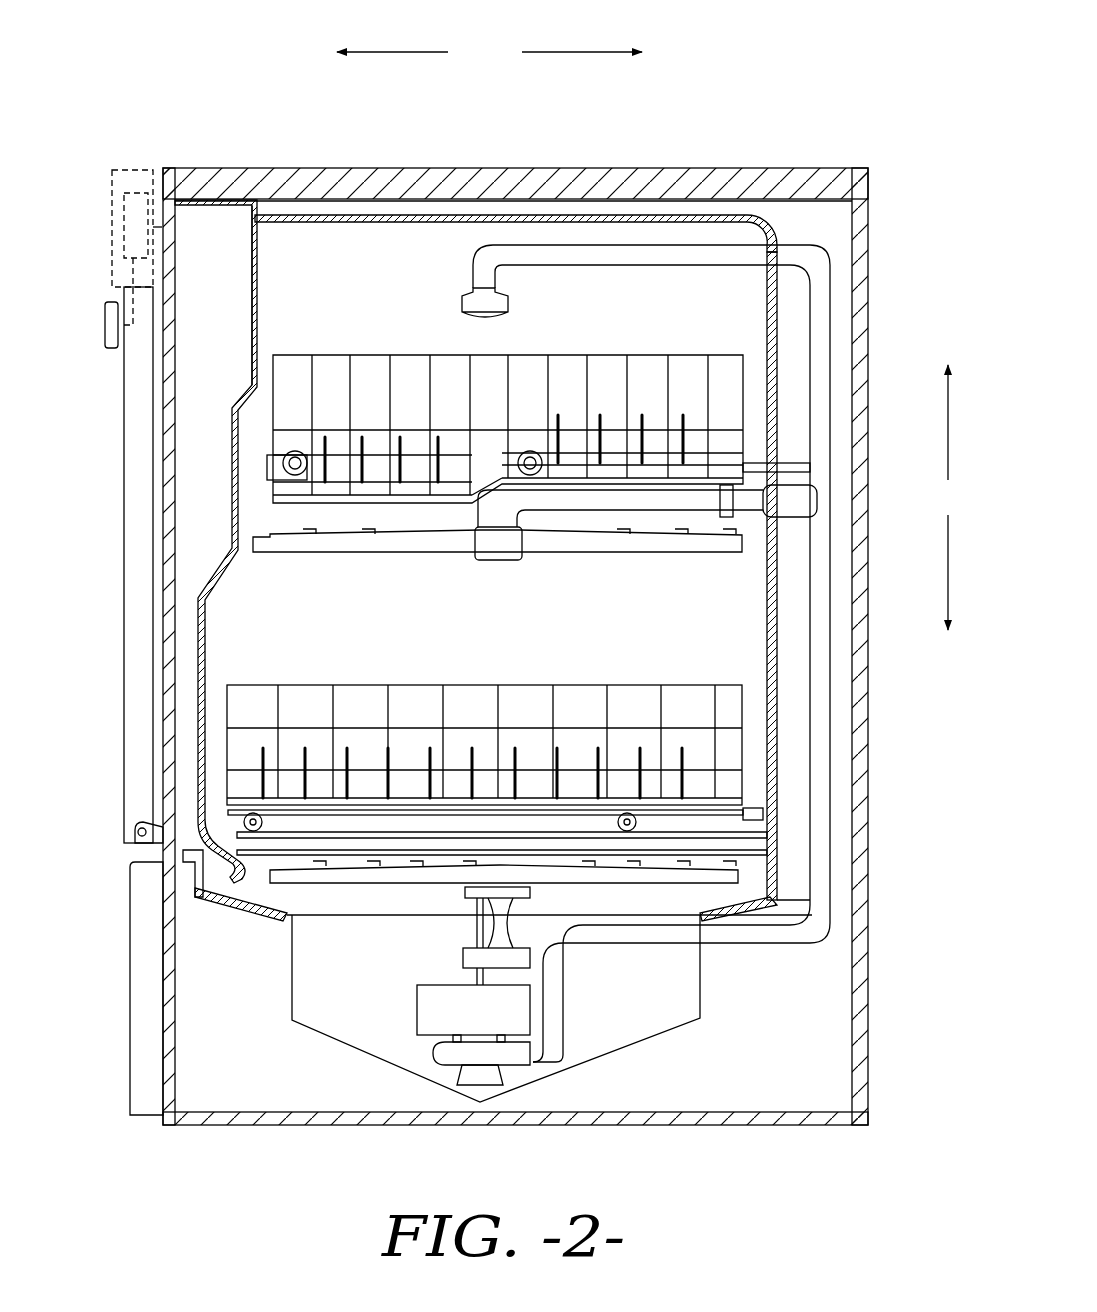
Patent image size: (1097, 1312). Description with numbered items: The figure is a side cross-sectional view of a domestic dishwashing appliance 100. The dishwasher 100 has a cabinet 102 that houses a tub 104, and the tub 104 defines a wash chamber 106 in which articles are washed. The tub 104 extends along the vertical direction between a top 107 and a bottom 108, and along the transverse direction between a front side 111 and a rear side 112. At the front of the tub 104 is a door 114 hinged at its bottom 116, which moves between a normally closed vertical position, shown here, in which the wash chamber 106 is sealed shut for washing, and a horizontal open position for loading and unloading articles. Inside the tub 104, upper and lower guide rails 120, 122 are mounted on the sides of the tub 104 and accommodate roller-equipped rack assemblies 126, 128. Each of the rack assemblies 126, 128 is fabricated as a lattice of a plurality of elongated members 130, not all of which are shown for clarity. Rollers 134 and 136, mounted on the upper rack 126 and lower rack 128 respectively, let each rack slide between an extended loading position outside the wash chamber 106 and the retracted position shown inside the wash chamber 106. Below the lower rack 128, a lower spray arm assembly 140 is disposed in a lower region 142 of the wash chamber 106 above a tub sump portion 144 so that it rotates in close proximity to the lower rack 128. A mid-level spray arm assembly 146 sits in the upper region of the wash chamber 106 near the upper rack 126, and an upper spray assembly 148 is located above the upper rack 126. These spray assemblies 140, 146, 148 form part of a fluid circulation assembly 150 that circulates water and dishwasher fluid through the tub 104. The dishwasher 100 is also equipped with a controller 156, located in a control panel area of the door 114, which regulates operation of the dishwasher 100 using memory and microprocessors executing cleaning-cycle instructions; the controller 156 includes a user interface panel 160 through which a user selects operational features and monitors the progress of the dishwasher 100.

The dishwashing appliance 100 is at (712, 116).
The cabinet 102 is at (868, 230).
The tub 104 is at (343, 633).
The wash chamber 106 is at (247, 622).
The top 107 is at (402, 227).
The bottom 108 is at (755, 888).
The front side 111 is at (262, 262).
The rear side 112 is at (766, 291).
The door 114 is at (125, 695).
The bottom of door 116 is at (135, 843).
The upper guide rail 120 is at (283, 462).
The lower guide rail 122 is at (226, 918).
The upper rack assembly 126 is at (335, 340).
The lower rack assembly 128 is at (627, 682).
The elongated members 130 is at (405, 684).
The rollers 134 is at (278, 489).
The rollers 136 is at (607, 812).
The lower spray arm assembly 140 is at (652, 877).
The lower region 142 is at (750, 818).
The tub sump portion 144 is at (285, 960).
The mid-level spray arm assembly 146 is at (542, 548).
The upper spray assembly 148 is at (508, 319).
The fluid circulation assembly 150 is at (834, 607).
The controller 156 is at (112, 215).
The user interface panel 160 is at (105, 324).